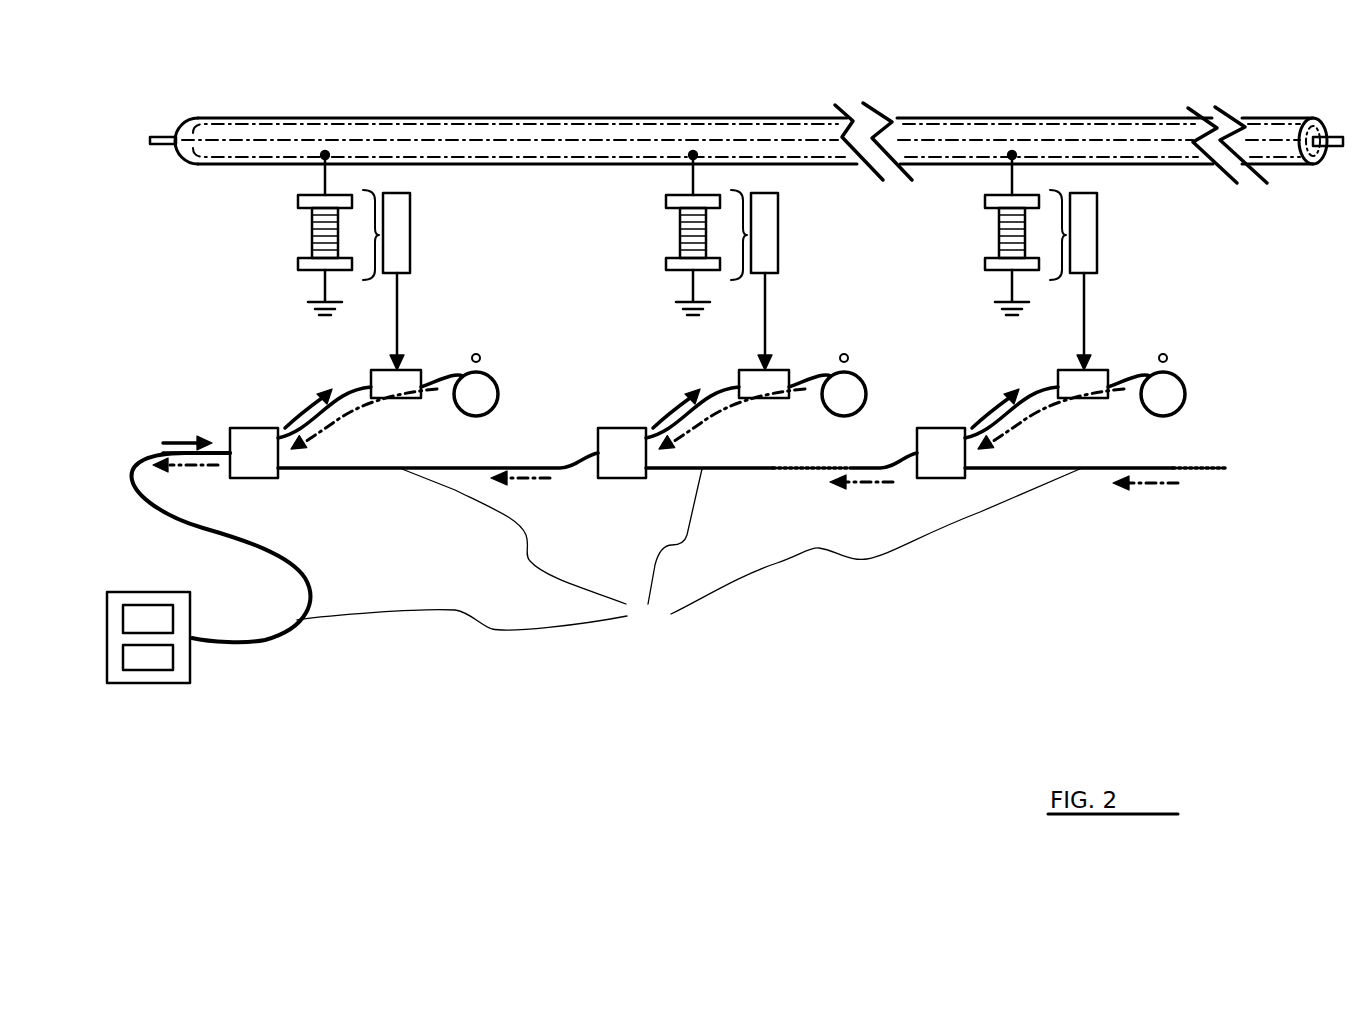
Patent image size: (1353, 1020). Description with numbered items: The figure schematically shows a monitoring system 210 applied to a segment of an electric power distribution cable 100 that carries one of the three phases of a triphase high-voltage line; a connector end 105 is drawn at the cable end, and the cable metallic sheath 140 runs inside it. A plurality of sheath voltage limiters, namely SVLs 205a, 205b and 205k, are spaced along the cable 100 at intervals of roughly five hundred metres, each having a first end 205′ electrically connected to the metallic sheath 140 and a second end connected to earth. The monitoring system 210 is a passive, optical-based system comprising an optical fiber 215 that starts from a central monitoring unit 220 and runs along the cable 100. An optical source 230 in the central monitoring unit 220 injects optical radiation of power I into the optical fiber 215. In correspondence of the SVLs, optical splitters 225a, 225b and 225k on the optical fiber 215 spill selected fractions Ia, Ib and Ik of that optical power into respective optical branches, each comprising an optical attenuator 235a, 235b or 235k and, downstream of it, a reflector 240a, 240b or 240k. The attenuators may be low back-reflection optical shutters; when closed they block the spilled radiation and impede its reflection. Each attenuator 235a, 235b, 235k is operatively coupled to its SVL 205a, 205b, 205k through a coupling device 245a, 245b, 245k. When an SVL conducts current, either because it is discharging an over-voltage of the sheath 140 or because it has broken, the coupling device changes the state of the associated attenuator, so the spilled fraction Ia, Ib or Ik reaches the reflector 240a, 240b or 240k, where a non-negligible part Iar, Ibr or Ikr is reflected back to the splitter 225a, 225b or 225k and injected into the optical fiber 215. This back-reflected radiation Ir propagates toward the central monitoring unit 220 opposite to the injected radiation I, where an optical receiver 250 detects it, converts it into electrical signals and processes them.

The electric power distribution cable 100 is at (629, 112).
The cable end connector 105 is at (160, 135).
The cable metallic sheath 140 is at (313, 125).
The first end of SVL 205′ is at (300, 200).
The SVL 205a is at (312, 230).
The SVL 205b is at (644, 232).
The SVL 205k is at (964, 232).
The coupling device 245a is at (410, 218).
The coupling device 245b is at (820, 281).
The coupling device 245k is at (1140, 281).
The optical attenuator 235a is at (383, 368).
The optical attenuator 235b is at (750, 354).
The optical attenuator 235k is at (1069, 355).
The reflector 240a is at (478, 355).
The reflector 240b is at (853, 356).
The reflector 240k is at (1172, 358).
The optical splitter 225a is at (245, 428).
The optical splitter 225b is at (752, 419).
The optical splitter 225k is at (1068, 418).
The optical power of injected optical radiation I is at (182, 440).
The spilled fraction of optical radiation Ia is at (318, 407).
The back-reflected optical radiation Iar is at (437, 395).
The back-reflected optical radiation Ir is at (177, 466).
The spilled fraction of optical radiation Ib is at (676, 382).
The back-reflected optical radiation Ibr is at (733, 423).
The spilled fraction of optical radiation Ik is at (992, 382).
The back-reflected optical radiation Ikr is at (1051, 423).
The optical fiber 215 is at (689, 549).
The central monitoring unit 220 is at (153, 683).
The optical source 230 is at (143, 613).
The optical receiver 250 is at (165, 658).
The monitoring system 210 is at (811, 706).